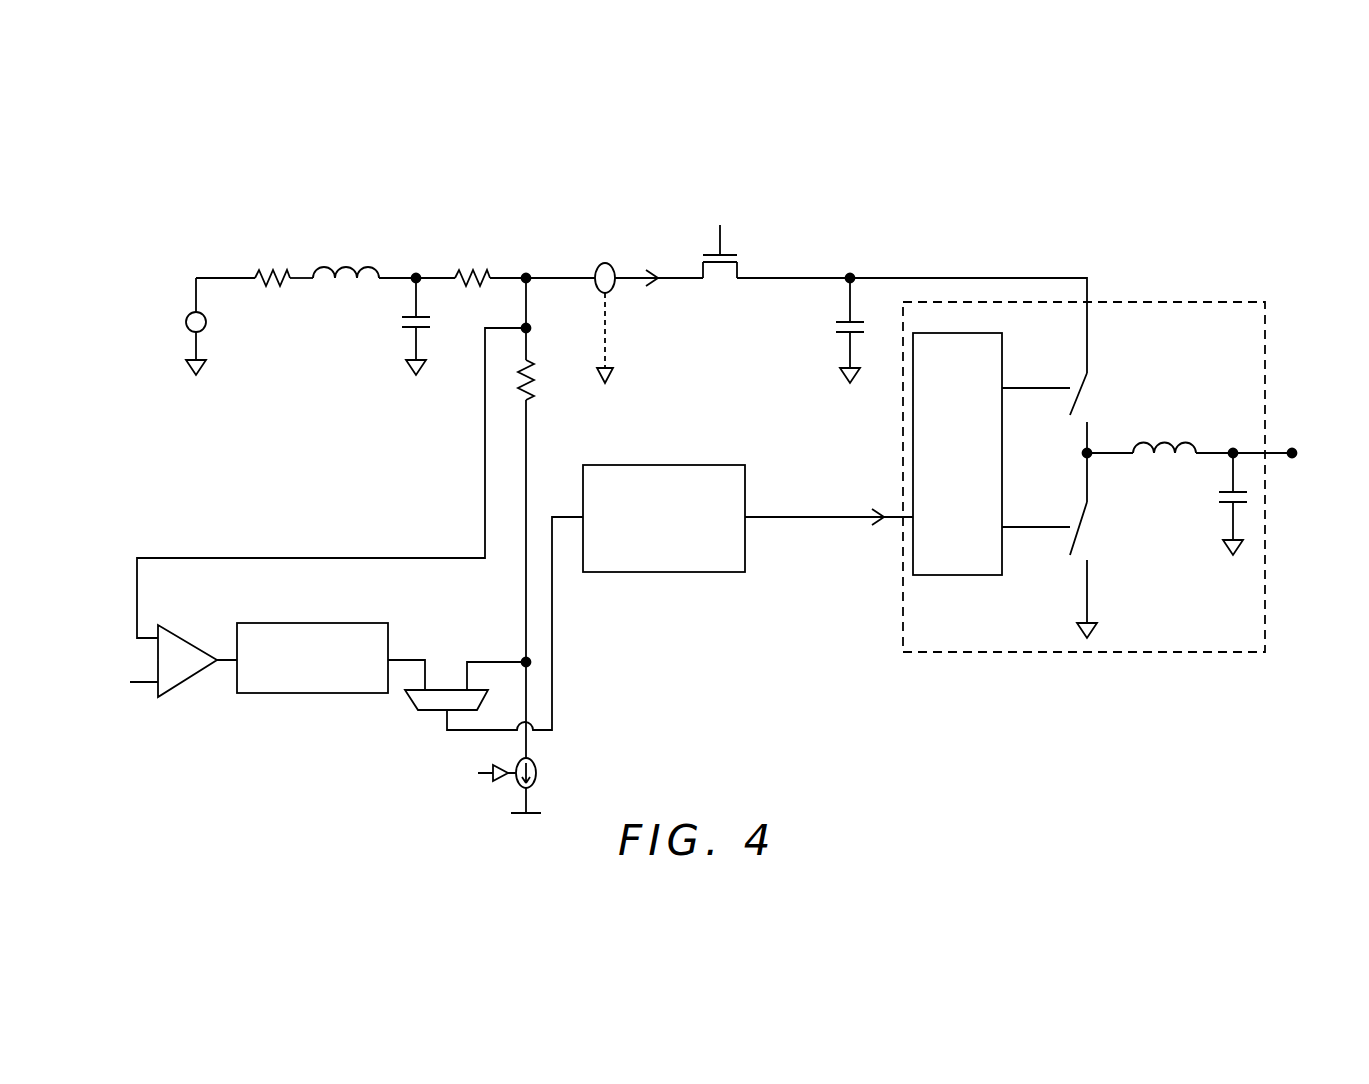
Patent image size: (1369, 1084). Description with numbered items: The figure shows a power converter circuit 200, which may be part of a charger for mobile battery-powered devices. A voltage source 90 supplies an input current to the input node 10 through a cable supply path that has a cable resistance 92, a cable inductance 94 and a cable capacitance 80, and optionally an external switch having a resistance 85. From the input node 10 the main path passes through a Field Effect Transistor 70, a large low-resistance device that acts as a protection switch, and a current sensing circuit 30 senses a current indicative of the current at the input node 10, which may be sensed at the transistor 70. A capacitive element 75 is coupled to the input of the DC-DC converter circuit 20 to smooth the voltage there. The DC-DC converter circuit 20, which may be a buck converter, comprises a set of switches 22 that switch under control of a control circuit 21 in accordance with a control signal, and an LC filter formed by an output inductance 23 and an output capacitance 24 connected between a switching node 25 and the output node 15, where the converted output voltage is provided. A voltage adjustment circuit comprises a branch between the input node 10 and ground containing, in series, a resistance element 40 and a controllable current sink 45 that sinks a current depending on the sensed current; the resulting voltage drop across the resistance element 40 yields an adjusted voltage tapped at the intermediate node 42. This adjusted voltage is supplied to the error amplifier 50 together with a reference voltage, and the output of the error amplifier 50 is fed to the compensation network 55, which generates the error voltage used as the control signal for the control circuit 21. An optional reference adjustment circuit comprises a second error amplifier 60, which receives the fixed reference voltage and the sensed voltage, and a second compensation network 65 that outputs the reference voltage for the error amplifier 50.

The power converter circuit 200 is at (1128, 213).
The input node 10 is at (544, 246).
The output node 15 is at (1312, 477).
The DC-DC converter circuit 20 is at (1180, 653).
The control circuit 21 is at (957, 333).
The set of switches 22 is at (1090, 404).
The output inductance 23 is at (1164, 432).
The output capacitance 24 is at (1222, 508).
The switching node 25 is at (1082, 487).
The current sensing circuit 30 is at (596, 290).
The resistance element 40 is at (537, 382).
The intermediate node 42 is at (522, 660).
The controllable current sink 45 is at (537, 773).
The error amplifier 50 is at (432, 712).
The compensation network 55 is at (695, 465).
The second error amplifier 60 is at (185, 637).
The second compensation network 65 is at (290, 623).
The Field Effect Transistor 70 is at (716, 230).
The capacitive element 75 is at (835, 340).
The cable capacitance 80 is at (400, 340).
The resistance of external switch 85 is at (480, 246).
The voltage source 90 is at (186, 318).
The cable resistance 92 is at (280, 246).
The cable inductance 94 is at (349, 246).